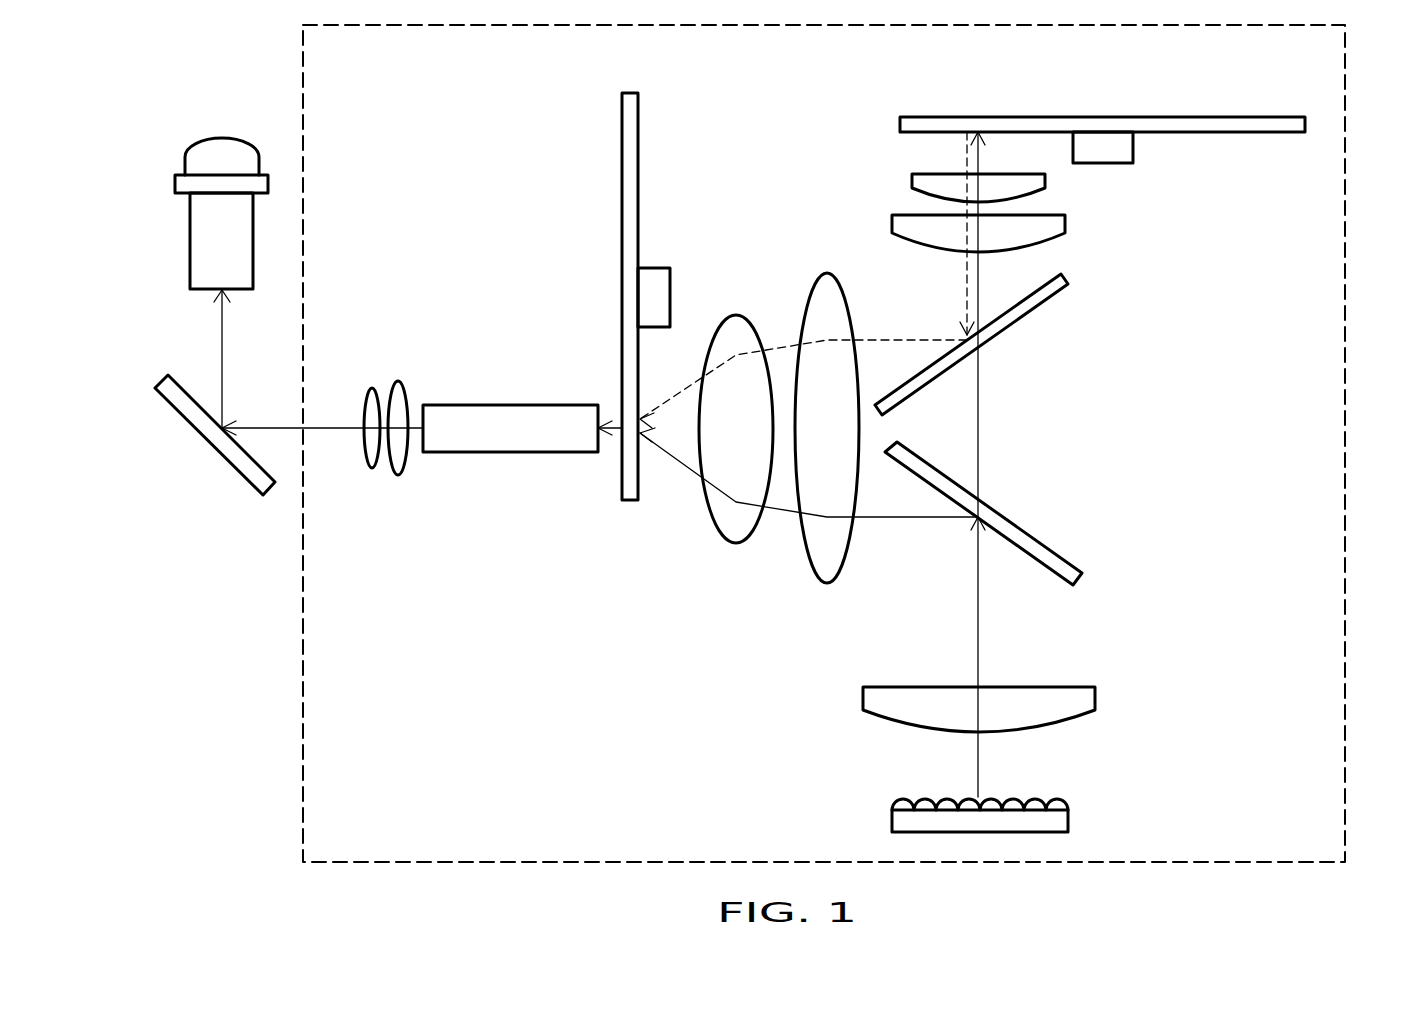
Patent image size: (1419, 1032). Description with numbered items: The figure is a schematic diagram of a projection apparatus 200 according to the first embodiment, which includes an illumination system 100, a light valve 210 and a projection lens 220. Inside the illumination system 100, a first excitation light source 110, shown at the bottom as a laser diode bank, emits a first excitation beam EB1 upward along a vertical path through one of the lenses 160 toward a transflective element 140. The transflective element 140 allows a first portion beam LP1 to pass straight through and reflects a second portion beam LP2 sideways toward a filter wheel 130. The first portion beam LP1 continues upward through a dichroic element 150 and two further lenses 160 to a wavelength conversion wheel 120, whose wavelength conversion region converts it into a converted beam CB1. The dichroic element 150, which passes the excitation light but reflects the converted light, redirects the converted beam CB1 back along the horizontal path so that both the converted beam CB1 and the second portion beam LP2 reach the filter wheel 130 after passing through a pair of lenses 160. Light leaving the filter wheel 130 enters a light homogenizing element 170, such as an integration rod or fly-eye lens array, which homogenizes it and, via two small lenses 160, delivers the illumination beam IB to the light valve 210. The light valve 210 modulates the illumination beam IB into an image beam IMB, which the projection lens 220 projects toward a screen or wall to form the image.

The illumination system 100 is at (303, 786).
The projection apparatus 200 is at (1398, 898).
The first excitation light source 110 is at (893, 818).
The wavelength conversion wheel 120 is at (1240, 118).
The filter wheel 130 is at (630, 97).
The transflective element 140 is at (1075, 577).
The dichroic element 150 is at (1045, 298).
The lenses 160 is at (372, 390).
The light homogenizing element 170 is at (502, 455).
The light valve 210 is at (230, 460).
The projection lens 220 is at (210, 153).
The illumination beam IB is at (330, 430).
The image beam IMB is at (222, 340).
The converted beam CB1 is at (967, 157).
The first excitation beam EB1 is at (977, 766).
The first portion beam LP1 is at (980, 422).
The second portion beam LP2 is at (918, 520).